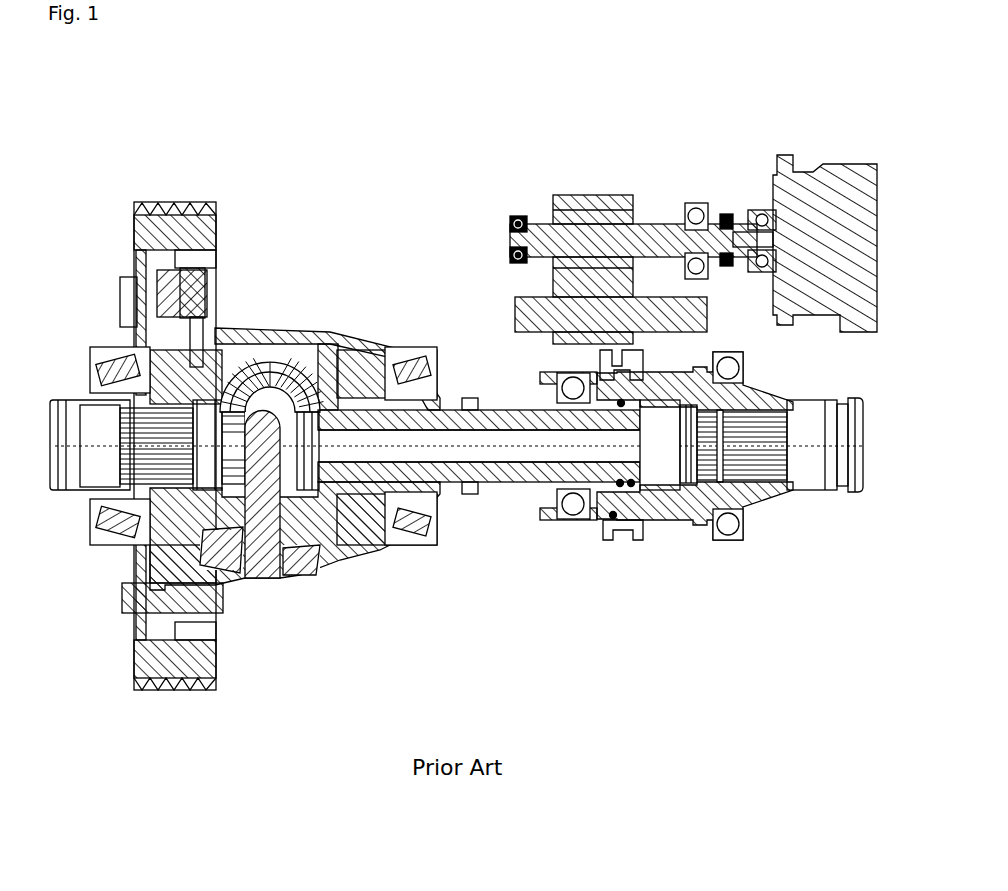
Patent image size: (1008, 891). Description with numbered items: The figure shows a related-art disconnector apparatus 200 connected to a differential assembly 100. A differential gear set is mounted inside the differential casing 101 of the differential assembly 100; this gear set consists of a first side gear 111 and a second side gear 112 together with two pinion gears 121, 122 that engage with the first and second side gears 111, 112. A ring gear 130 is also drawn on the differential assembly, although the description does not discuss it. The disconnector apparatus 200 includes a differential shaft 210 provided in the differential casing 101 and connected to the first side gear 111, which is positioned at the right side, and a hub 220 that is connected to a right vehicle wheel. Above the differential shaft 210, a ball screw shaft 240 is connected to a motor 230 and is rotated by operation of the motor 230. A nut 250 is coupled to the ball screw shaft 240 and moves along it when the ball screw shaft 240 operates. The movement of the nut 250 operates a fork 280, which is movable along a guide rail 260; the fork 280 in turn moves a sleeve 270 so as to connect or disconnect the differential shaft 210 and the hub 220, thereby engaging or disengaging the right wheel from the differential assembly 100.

The differential assembly 100 is at (302, 308).
The differential casing 101 is at (316, 552).
The first side gear 111 is at (340, 545).
The second side gear 112 is at (207, 520).
The pinion gear 121 is at (278, 378).
The pinion gear 122 is at (289, 540).
The ring gear 130 is at (186, 205).
The disconnector apparatus 200 is at (728, 184).
The differential shaft 210 is at (488, 418).
The hub 220 is at (692, 505).
The motor 230 is at (827, 177).
The ball screw shaft 240 is at (655, 226).
The nut 250 is at (588, 195).
The guide rail 260 is at (523, 313).
The sleeve 270 is at (598, 366).
The fork 280 is at (555, 344).